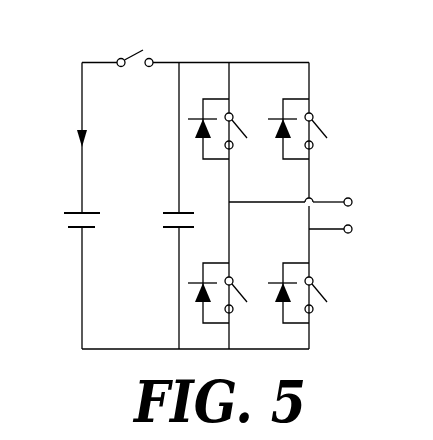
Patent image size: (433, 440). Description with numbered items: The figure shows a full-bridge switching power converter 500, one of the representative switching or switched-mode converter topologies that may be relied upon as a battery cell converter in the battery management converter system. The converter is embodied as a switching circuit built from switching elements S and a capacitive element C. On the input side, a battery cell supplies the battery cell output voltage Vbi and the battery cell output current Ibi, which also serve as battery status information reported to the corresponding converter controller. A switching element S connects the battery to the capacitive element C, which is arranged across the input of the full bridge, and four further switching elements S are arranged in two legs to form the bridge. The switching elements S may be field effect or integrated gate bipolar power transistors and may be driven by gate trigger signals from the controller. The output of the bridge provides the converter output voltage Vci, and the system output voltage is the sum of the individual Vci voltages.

The full-bridge switching power converter 500 is at (49, 51).
The switching element S is at (133, 52).
The capacitive element C is at (181, 208).
The battery cell output voltage Vbi is at (98, 224).
The battery cell output current Ibi is at (98, 139).
The output voltage Vci is at (350, 215).